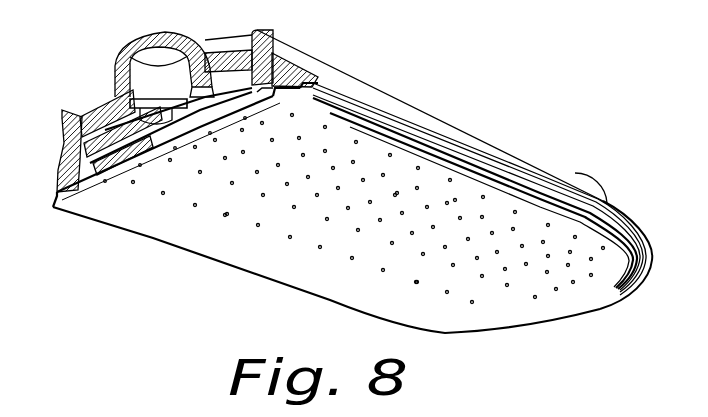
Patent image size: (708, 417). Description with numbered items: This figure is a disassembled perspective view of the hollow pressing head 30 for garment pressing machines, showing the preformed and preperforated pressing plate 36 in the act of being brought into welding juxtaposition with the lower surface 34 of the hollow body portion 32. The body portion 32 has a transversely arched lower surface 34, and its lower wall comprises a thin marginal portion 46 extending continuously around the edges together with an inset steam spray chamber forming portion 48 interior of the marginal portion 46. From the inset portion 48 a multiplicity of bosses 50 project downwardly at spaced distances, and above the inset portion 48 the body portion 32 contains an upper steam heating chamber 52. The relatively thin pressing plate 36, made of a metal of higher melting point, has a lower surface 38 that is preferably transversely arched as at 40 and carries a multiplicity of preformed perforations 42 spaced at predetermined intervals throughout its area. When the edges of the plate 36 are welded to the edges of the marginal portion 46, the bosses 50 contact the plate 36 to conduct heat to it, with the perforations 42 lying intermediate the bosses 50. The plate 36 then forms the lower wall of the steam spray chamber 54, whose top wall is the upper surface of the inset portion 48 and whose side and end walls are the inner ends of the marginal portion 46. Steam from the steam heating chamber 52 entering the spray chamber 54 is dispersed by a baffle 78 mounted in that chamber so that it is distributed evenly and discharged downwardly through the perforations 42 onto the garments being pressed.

The hollow pressing head 30 is at (413, 92).
The hollow body portion 32 is at (468, 132).
The lower surface of the body portion 34 is at (337, 97).
The pressing plate 36 is at (475, 178).
The lower surface of the pressing plate 38 is at (530, 213).
The transversely arched portion 40 is at (78, 120).
The perforations 42 is at (573, 284).
The marginal portion 46 is at (417, 123).
The inset steam spray chamber forming portion 48 is at (266, 90).
The bosses 50 is at (254, 84).
The steam heating chamber 52 is at (111, 125).
The steam spray chamber 54 is at (198, 87).
The baffle 78 is at (172, 75).